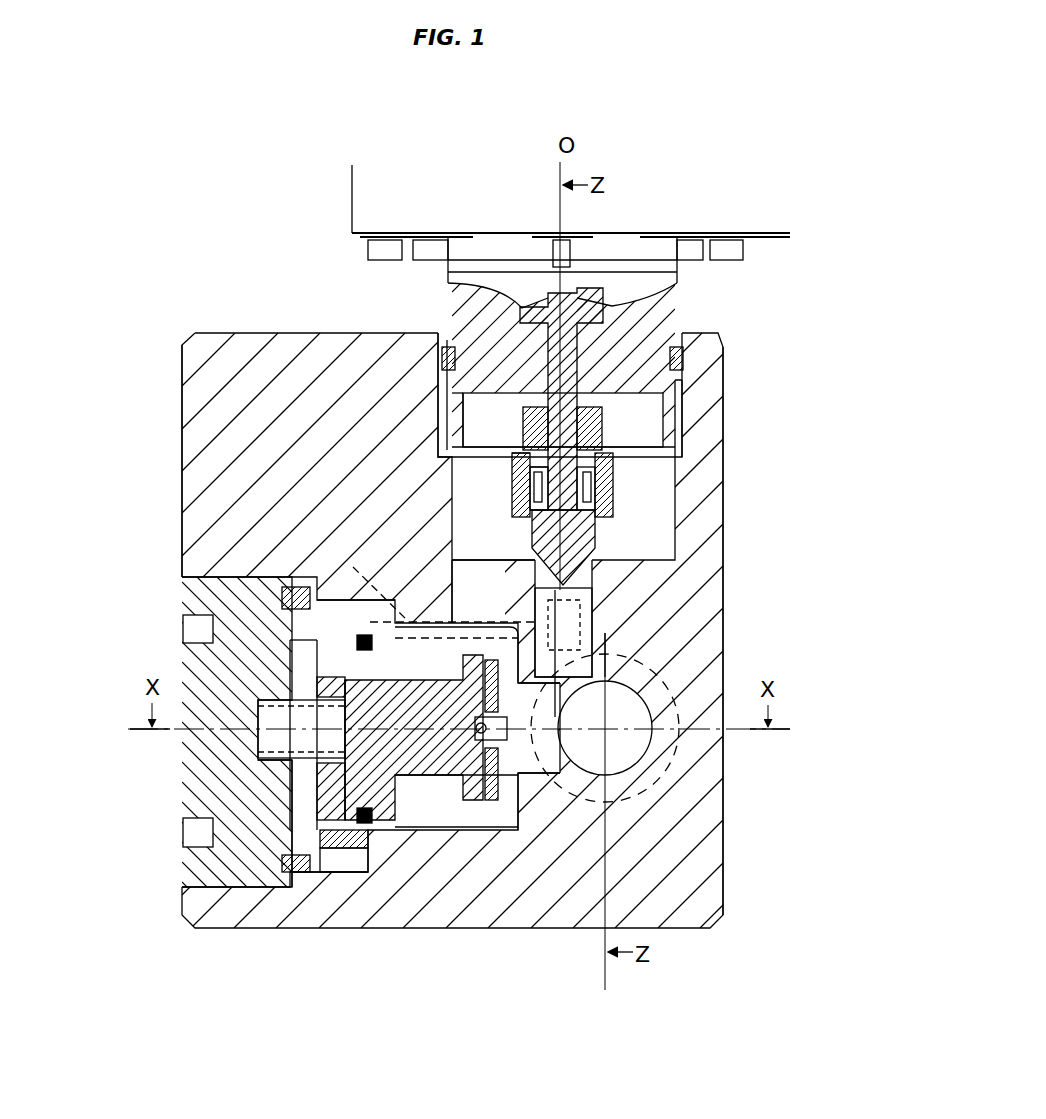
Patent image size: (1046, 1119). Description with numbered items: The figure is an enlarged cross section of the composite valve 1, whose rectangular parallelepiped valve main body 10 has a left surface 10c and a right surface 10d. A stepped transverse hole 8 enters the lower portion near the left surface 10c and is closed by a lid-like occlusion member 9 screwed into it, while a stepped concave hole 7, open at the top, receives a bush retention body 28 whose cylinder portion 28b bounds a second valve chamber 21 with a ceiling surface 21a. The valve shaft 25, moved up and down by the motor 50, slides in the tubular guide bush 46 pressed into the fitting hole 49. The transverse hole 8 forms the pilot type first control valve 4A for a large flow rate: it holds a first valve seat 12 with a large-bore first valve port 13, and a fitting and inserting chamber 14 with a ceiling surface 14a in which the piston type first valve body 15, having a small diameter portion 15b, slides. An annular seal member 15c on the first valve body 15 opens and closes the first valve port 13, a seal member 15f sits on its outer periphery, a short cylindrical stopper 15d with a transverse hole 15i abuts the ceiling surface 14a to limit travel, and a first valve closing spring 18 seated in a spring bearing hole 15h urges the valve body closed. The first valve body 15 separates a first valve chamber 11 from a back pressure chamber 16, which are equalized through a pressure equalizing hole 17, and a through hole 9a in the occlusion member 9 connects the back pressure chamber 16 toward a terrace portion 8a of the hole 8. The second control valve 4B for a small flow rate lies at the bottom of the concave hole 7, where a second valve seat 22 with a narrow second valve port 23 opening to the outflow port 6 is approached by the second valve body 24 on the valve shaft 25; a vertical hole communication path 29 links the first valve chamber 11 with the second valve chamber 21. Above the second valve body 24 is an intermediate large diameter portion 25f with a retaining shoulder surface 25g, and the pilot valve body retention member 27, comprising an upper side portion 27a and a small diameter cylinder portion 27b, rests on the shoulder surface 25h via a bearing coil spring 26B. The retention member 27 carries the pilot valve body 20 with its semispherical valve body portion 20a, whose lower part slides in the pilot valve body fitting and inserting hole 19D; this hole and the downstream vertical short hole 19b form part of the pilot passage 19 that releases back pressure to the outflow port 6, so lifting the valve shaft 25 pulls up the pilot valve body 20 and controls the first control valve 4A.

The composite valve 1 is at (262, 160).
The motor 50 is at (352, 234).
The tubular guide bush 46 is at (455, 298).
The fitting hole 49 is at (444, 308).
The valve main body 10 is at (215, 333).
The left surface 10c is at (182, 480).
The right surface 10d is at (724, 628).
The ceiling surface 21a is at (470, 393).
The small diameter cylinder portion 27b is at (530, 407).
The upper side portion 27a is at (595, 407).
The valve shaft 25 is at (660, 310).
The bush retention body 28 is at (695, 352).
The cylinder portion with ceiling surface 28b is at (684, 416).
The stepped concave hole 7 is at (438, 388).
The second valve chamber 21 is at (480, 418).
The bearing coil spring 26B is at (450, 425).
The pilot valve body retention member 27 is at (512, 472).
The retaining shoulder surface 25g is at (512, 487).
The intermediate large diameter portion 25f is at (520, 498).
The shoulder surface 25h is at (512, 508).
The second control valve 4B is at (460, 543).
The second valve body 24 is at (596, 512).
The second valve seat 22 is at (596, 542).
The pilot passage 19 is at (400, 622).
The vertical hole communication path 29 is at (458, 582).
The seal member 15f is at (368, 614).
The first valve chamber 11 is at (430, 660).
The lid-like occlusion member 9 is at (197, 665).
The through hole 9a is at (285, 600).
The transverse hole 15i is at (300, 670).
The short cylindrical stopper 15d is at (300, 692).
The back pressure chamber 16 is at (292, 720).
The pressure equalizing hole 17 is at (400, 737).
The spring bearing hole 15h is at (440, 768).
The first valve closing spring 18 is at (300, 790).
The ceiling surface 14a is at (300, 795).
The small diameter portion 15b is at (402, 776).
The first valve body 15 is at (495, 805).
The fitting and inserting chamber 14 is at (372, 850).
The stepped transverse hole 8 is at (332, 880).
The terrace portion 8a is at (345, 870).
The first control valve 4A is at (520, 845).
The annular seal member 15c is at (492, 802).
The first valve seat 12 is at (516, 790).
The second valve port 23 is at (555, 650).
The first valve port 13 is at (565, 770).
The outflow port 6 is at (652, 770).
The pilot valve body fitting and inserting hole 19D is at (595, 606).
The pilot valve body 20 is at (585, 630).
The semispherical valve body portion 20a is at (596, 652).
The downstream vertical short hole 19b is at (618, 682).